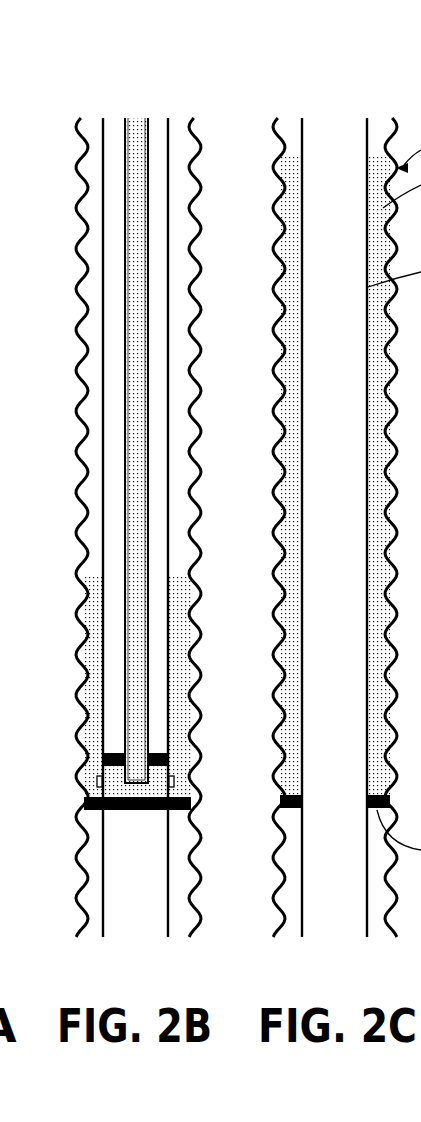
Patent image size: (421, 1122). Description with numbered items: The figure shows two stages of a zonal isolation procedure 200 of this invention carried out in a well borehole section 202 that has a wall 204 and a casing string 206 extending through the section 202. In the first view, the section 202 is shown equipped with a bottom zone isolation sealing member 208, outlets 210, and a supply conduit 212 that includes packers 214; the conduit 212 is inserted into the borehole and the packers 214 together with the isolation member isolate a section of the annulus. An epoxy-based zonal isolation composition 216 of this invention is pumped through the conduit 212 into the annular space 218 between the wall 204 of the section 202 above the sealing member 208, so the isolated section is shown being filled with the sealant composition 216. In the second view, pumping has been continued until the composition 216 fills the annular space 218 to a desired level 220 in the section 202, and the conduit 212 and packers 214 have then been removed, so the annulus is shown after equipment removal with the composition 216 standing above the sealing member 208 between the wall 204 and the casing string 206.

In FIG. 2B, the zonal isolation procedure 200 is at (236, 68).
In FIG. 2B, the well borehole section 202 is at (62, 209).
In FIG. 2B, the wall 204 is at (88, 247).
In FIG. 2B, the casing string 206 is at (101, 333).
In FIG. 2B, the bottom zone isolation sealing member 208 is at (176, 811).
In FIG. 2B, the outlets 210 is at (85, 780).
In FIG. 2B, the supply conduit 212 is at (125, 646).
In FIG. 2B, the packers 214 is at (103, 760).
In FIG. 2B, the epoxy-based zonal isolation composition 216 is at (130, 603).
In FIG. 2C, the epoxy-based zonal isolation composition 216 is at (290, 524).
In FIG. 2B, the annular space 218 is at (90, 420).
In FIG. 2C, the desired level 220 is at (300, 153).